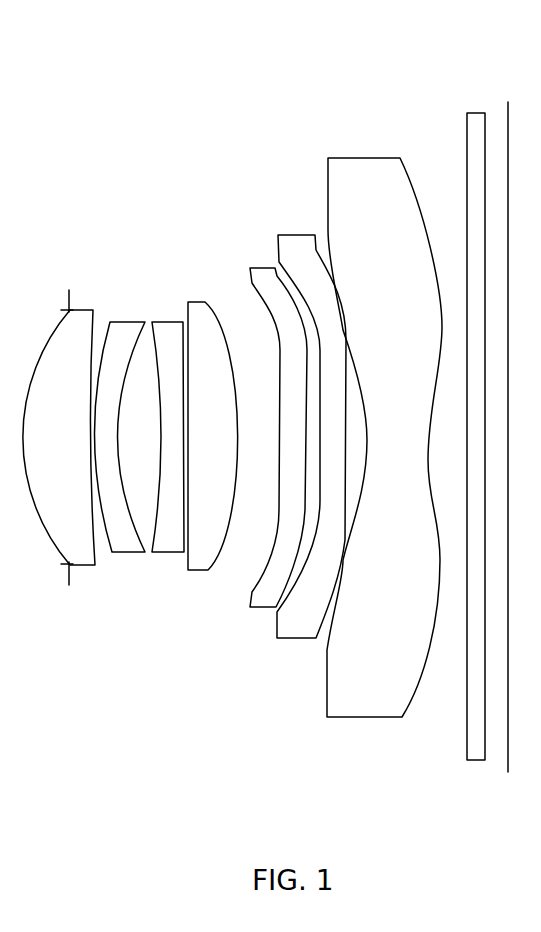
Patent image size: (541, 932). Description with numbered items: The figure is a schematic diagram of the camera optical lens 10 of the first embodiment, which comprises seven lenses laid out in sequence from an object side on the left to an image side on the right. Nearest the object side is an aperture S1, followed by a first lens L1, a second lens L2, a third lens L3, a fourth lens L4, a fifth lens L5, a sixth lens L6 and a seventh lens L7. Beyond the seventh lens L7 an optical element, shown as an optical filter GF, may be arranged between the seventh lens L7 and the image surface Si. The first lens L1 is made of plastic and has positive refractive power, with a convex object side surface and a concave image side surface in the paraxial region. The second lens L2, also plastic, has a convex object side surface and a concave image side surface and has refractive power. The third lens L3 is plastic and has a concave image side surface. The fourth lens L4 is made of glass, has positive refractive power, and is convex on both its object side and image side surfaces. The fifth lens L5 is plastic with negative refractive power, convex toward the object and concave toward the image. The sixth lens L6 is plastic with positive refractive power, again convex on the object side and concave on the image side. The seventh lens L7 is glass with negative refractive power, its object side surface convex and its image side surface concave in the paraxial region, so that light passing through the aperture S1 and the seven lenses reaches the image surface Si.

The camera optical lens 10 is at (297, 62).
The aperture S1 is at (57, 435).
The first lens L1 is at (59, 425).
The second lens L2 is at (119, 425).
The third lens L3 is at (168, 425).
The fourth lens L4 is at (213, 424).
The fifth lens L5 is at (278, 425).
The sixth lens L6 is at (311, 425).
The seventh lens L7 is at (384, 425).
The optical filter GF is at (473, 427).
The image surface Si is at (505, 425).